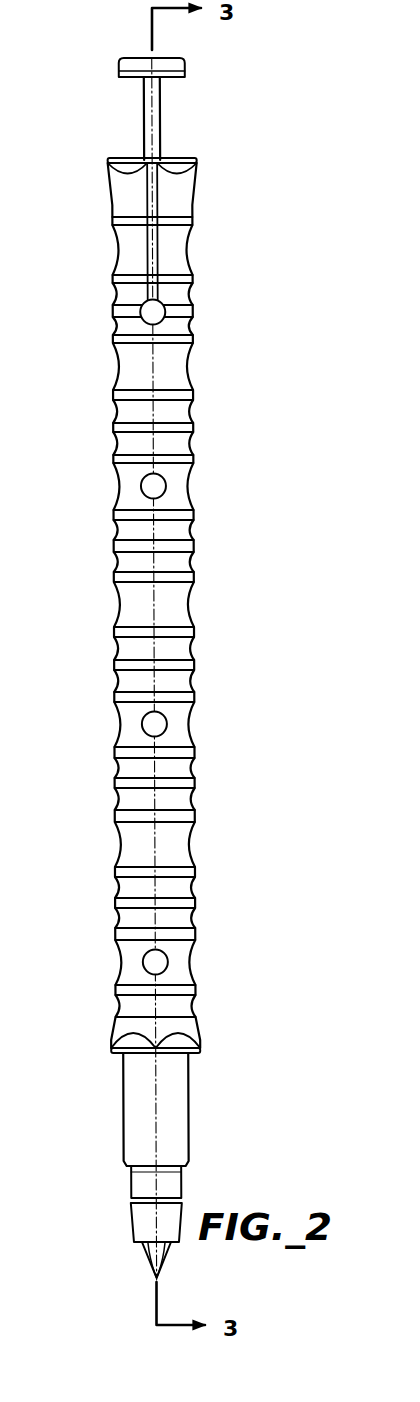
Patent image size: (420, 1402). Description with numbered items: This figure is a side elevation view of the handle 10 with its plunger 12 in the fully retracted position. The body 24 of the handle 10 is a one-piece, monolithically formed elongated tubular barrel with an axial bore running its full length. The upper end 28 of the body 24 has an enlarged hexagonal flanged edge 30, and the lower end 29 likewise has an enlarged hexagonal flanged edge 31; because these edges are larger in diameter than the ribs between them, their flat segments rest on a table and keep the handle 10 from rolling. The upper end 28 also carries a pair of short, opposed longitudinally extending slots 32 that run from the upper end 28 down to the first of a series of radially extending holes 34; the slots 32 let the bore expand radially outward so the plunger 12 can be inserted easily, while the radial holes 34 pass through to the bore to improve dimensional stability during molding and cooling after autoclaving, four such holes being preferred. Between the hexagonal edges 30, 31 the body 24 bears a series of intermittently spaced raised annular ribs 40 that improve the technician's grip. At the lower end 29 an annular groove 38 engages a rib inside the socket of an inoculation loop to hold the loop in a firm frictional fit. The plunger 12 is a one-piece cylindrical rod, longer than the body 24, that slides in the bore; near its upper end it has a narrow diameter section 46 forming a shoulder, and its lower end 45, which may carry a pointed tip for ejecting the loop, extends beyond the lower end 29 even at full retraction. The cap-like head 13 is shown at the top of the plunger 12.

The handle 10 is at (216, 51).
The plunger 12 is at (145, 125).
The head / cap of shaft 13 is at (138, 57).
The body 24 is at (120, 608).
The upper end 28 is at (206, 180).
The lower end 29 is at (126, 1183).
The hexagonal flanged edge 30 is at (113, 176).
The hexagonal flanged edge 31 is at (120, 1057).
The longitudinally extending slots 32 is at (160, 253).
The radially extending holes 34 is at (168, 722).
The annular groove 38 is at (181, 1200).
The raised annular ribs 40 is at (106, 314).
The lower end of plunger 45 is at (171, 1257).
The narrow diameter section 46 is at (162, 108).